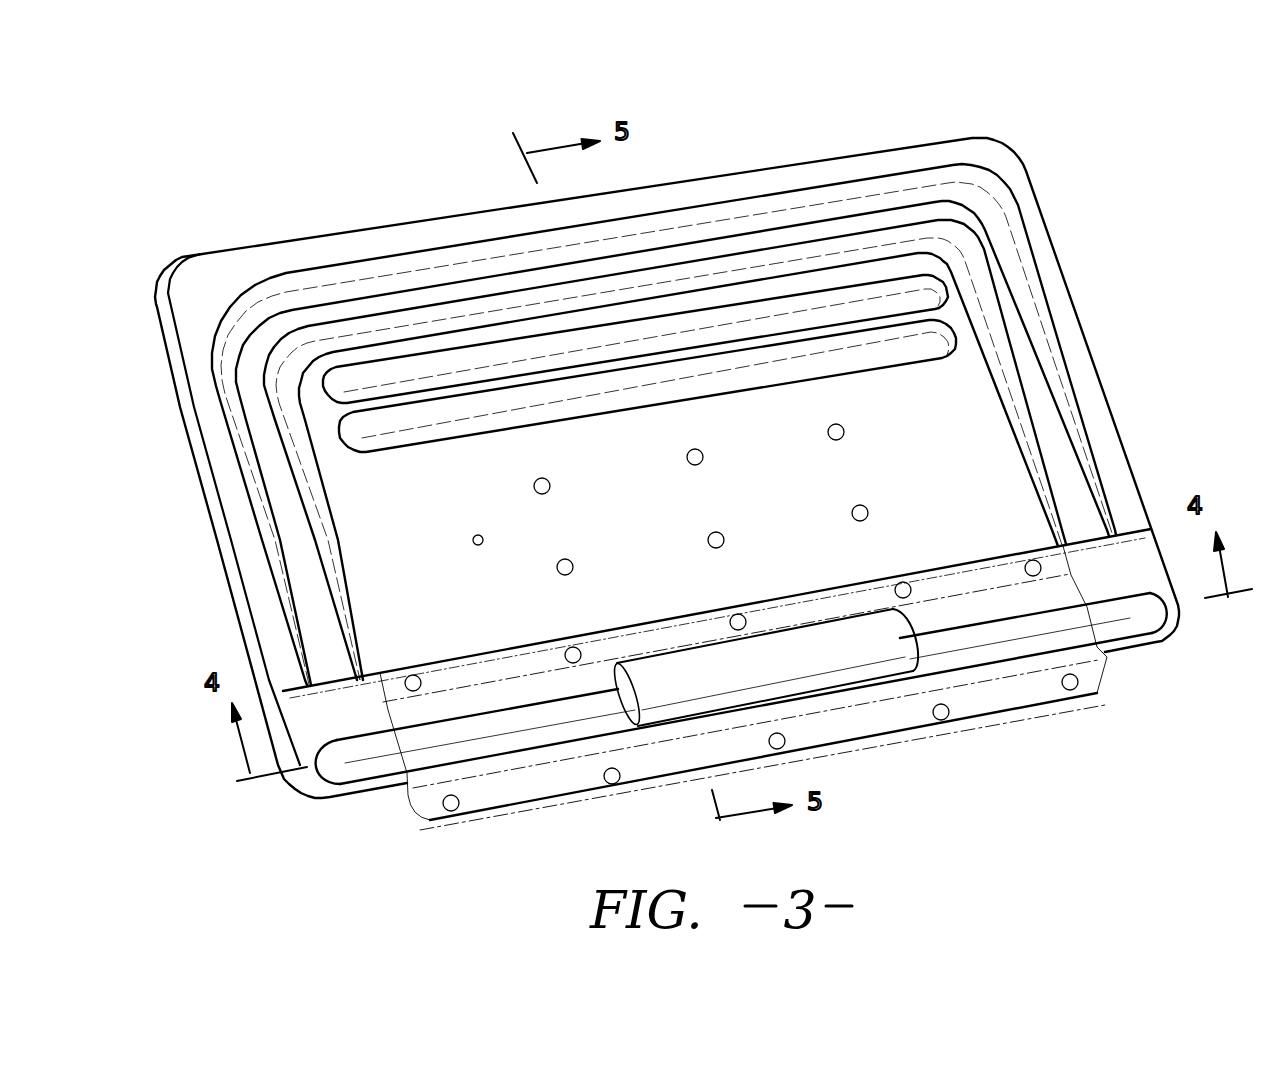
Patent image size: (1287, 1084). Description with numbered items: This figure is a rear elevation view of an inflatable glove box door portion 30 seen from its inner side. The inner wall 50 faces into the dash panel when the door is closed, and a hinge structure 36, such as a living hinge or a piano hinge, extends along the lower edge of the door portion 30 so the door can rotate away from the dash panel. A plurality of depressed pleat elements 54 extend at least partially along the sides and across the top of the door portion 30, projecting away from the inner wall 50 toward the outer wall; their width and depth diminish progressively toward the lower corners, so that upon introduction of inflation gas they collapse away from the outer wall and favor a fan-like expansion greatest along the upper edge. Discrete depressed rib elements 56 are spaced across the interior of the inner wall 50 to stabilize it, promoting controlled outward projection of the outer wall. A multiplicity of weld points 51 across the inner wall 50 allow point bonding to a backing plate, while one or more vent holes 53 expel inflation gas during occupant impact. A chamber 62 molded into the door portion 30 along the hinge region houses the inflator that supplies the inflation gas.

The door portion 30 is at (1160, 150).
The hinge structure 36 is at (1103, 695).
The inner wall 50 is at (940, 457).
The weld points 51 is at (725, 545).
The vent holes 53 is at (474, 536).
The depressed pleat elements 54 is at (888, 227).
The depressed rib elements 56 is at (940, 283).
The chamber 62 is at (633, 712).